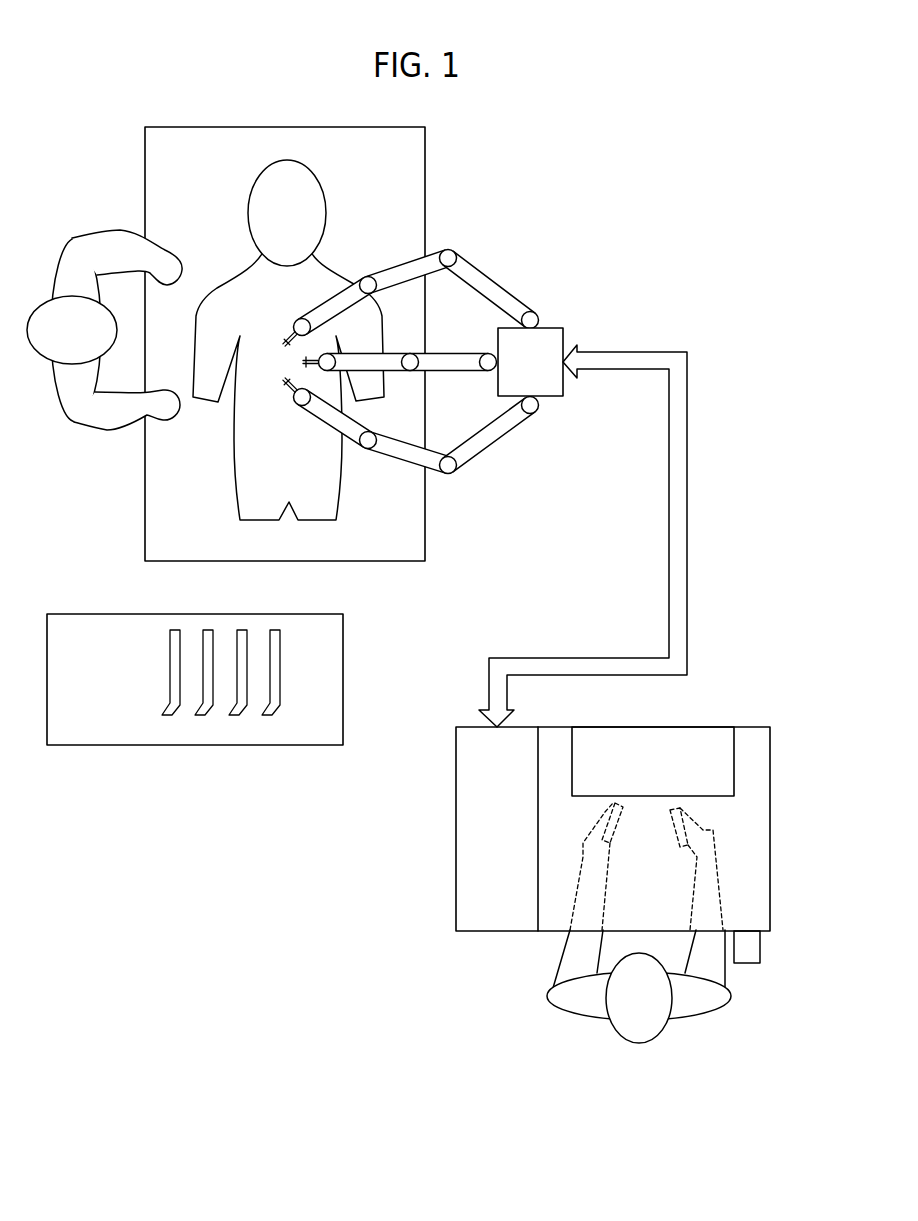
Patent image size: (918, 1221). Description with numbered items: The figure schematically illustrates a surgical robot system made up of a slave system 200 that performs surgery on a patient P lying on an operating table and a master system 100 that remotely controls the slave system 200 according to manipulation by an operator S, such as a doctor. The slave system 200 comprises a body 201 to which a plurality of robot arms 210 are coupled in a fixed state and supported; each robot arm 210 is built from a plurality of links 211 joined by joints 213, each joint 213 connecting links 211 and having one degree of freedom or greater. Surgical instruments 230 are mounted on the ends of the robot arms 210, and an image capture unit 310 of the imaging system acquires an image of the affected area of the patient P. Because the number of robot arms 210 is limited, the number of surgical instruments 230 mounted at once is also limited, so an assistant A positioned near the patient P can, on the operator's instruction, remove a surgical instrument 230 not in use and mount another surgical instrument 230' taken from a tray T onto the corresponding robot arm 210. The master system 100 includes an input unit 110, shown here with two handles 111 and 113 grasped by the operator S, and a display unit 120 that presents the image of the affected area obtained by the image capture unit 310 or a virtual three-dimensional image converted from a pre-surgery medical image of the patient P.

The master system 100 is at (637, 807).
The input unit 110 is at (646, 866).
The handle 111 is at (615, 815).
The handle 113 is at (685, 840).
The display unit 120 is at (734, 758).
The slave system 200 is at (444, 333).
The body 201 is at (558, 390).
The robot arm 210 is at (424, 333).
The link 211 is at (503, 290).
The joint 213 is at (447, 270).
The surgical instrument 230 is at (266, 362).
The surgical instrument 230' is at (181, 672).
The image capture unit 310 is at (303, 362).
The patient P is at (242, 285).
The assistant A is at (62, 400).
The tray T is at (195, 655).
The operator S is at (698, 1010).